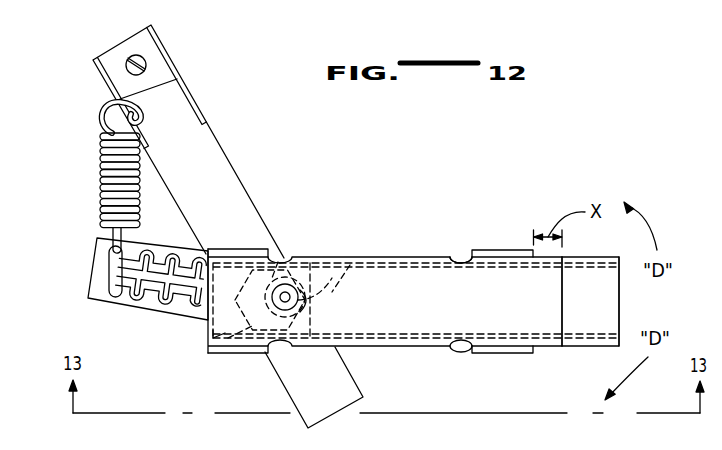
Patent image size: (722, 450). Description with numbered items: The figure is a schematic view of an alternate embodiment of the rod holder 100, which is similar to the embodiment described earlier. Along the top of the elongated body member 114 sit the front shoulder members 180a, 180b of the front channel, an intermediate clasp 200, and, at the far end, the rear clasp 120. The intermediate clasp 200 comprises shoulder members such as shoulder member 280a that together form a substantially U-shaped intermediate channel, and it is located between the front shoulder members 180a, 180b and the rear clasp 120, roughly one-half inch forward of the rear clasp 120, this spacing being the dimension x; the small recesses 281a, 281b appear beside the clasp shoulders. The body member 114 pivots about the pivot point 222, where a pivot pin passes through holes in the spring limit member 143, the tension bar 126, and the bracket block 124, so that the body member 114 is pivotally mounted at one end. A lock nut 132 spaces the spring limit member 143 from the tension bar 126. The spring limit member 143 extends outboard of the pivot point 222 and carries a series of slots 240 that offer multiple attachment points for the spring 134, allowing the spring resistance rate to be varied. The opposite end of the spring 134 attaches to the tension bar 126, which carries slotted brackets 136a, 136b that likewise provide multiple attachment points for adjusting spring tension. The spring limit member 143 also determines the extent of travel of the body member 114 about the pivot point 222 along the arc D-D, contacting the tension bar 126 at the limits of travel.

The rod holder 100 is at (416, 138).
The body member 114 is at (405, 280).
The rear clasp 120 is at (603, 313).
The bracket block 124 is at (352, 255).
The tension bar 126 is at (195, 143).
The lock nut 132 is at (199, 347).
The spring 134 is at (102, 182).
The slotted bracket 136a is at (172, 55).
The slotted bracket 136b is at (105, 82).
The spring limit member 143 is at (157, 292).
The front shoulder member 180a is at (230, 252).
The front shoulder member 180b is at (240, 354).
The intermediate clasp 200 is at (522, 238).
The pivot point 222 is at (293, 243).
The slots 240 is at (108, 289).
The shoulder member 280a is at (497, 252).
The notch 281a is at (471, 253).
The notch 281b is at (468, 352).